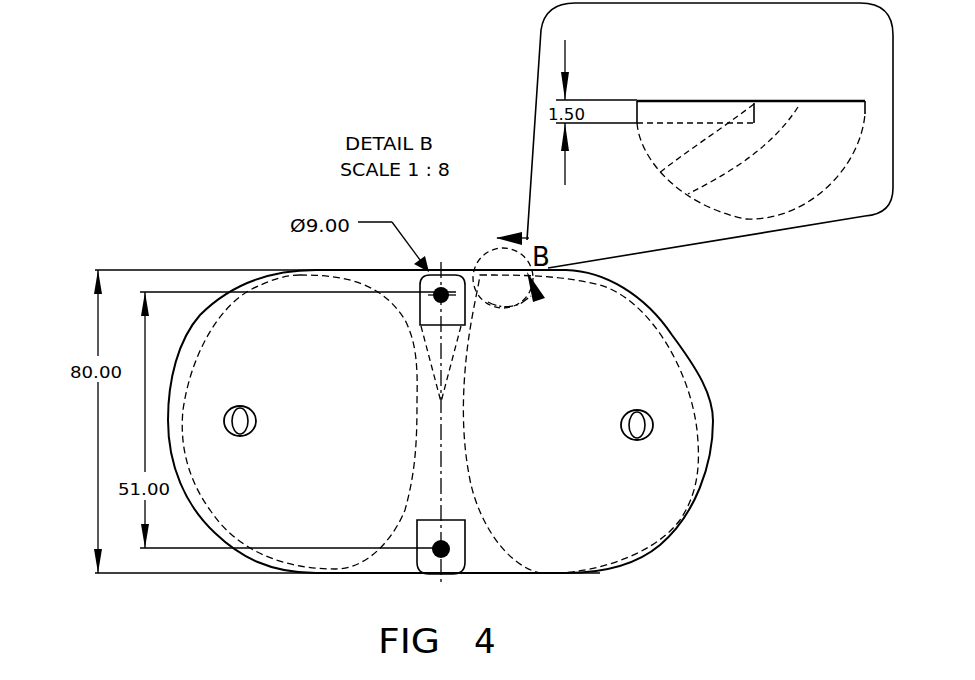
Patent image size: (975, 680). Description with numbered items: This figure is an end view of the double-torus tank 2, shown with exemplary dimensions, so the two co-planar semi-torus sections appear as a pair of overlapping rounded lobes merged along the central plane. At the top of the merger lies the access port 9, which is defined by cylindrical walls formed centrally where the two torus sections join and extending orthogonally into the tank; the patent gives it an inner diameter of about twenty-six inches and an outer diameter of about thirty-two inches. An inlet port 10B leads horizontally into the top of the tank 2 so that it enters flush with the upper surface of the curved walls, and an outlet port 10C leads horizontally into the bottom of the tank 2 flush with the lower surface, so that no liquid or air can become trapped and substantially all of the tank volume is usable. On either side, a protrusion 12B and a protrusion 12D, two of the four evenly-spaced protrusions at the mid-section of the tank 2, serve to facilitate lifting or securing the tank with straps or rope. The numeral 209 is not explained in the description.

The double-torus tank 2 is at (201, 190).
The access port 9 is at (458, 269).
The inlet port 10B is at (440, 269).
The outlet port 10C is at (430, 562).
The protrusion 12B is at (236, 410).
The protrusion 12D is at (652, 415).
The lip 209 is at (509, 236).